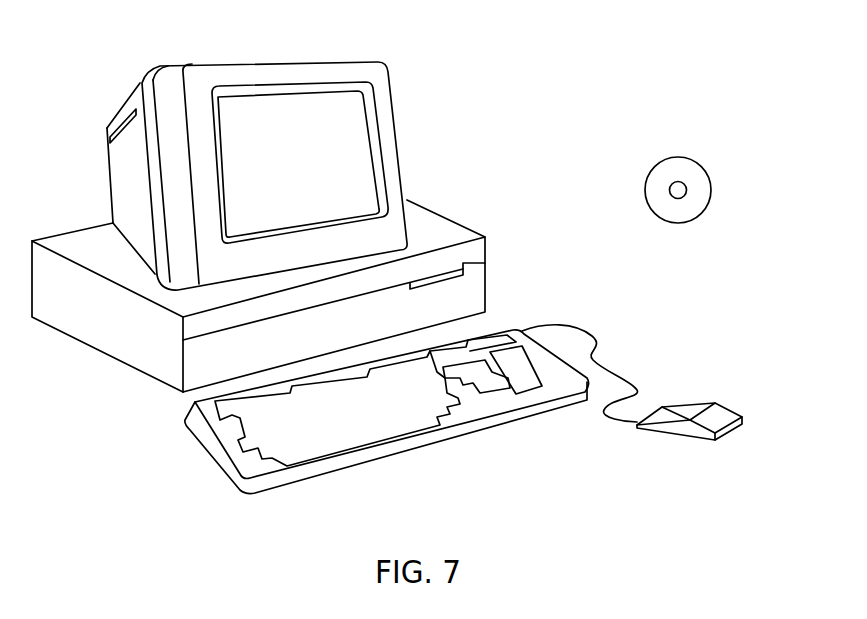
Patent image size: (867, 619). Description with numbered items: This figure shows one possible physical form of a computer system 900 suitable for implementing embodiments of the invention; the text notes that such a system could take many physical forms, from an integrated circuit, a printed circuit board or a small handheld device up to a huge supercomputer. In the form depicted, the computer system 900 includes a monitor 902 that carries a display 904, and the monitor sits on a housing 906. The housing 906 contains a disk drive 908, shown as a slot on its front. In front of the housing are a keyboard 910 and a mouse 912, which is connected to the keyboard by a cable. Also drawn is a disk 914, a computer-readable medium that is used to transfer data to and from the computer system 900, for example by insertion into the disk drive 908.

The computer system 900 is at (596, 39).
The monitor 902 is at (405, 172).
The display 904 is at (364, 128).
The housing 906 is at (150, 376).
The disk drive 908 is at (464, 268).
The keyboard 910 is at (392, 452).
The mouse 912 is at (727, 408).
The disk 914 is at (699, 163).